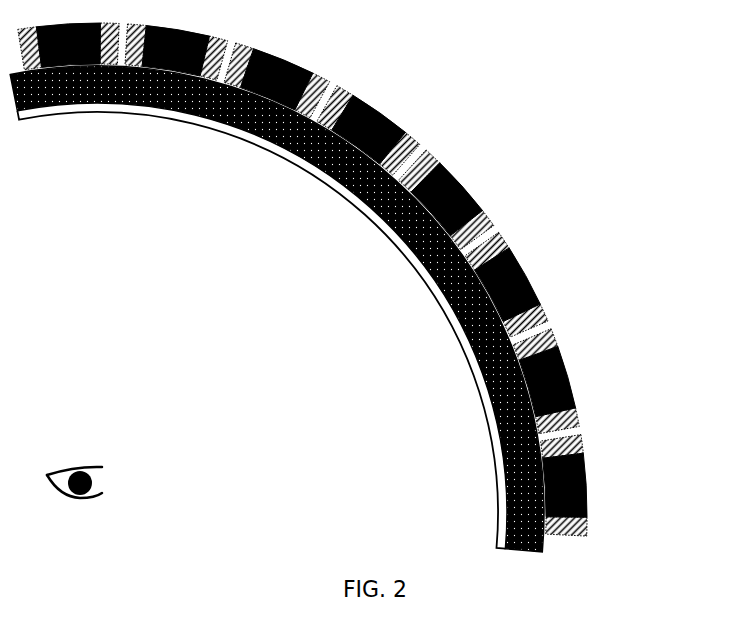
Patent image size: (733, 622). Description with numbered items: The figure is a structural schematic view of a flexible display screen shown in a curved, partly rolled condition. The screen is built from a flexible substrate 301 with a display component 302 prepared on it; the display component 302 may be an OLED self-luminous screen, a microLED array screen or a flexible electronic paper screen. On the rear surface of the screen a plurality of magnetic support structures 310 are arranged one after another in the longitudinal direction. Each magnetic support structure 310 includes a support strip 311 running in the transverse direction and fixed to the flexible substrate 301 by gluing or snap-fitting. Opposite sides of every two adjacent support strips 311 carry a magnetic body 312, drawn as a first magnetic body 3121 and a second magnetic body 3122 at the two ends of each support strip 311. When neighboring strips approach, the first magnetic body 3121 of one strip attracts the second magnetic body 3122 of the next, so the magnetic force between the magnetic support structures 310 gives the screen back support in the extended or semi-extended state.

The flexible substrate 301 is at (359, 287).
The display component 302 is at (465, 355).
The magnetic support structure 310 is at (359, 287).
The support strip 311 is at (462, 193).
The magnetic body 312 is at (335, 279).
The first magnetic body 3121 is at (427, 157).
The second magnetic body 3122 is at (487, 236).